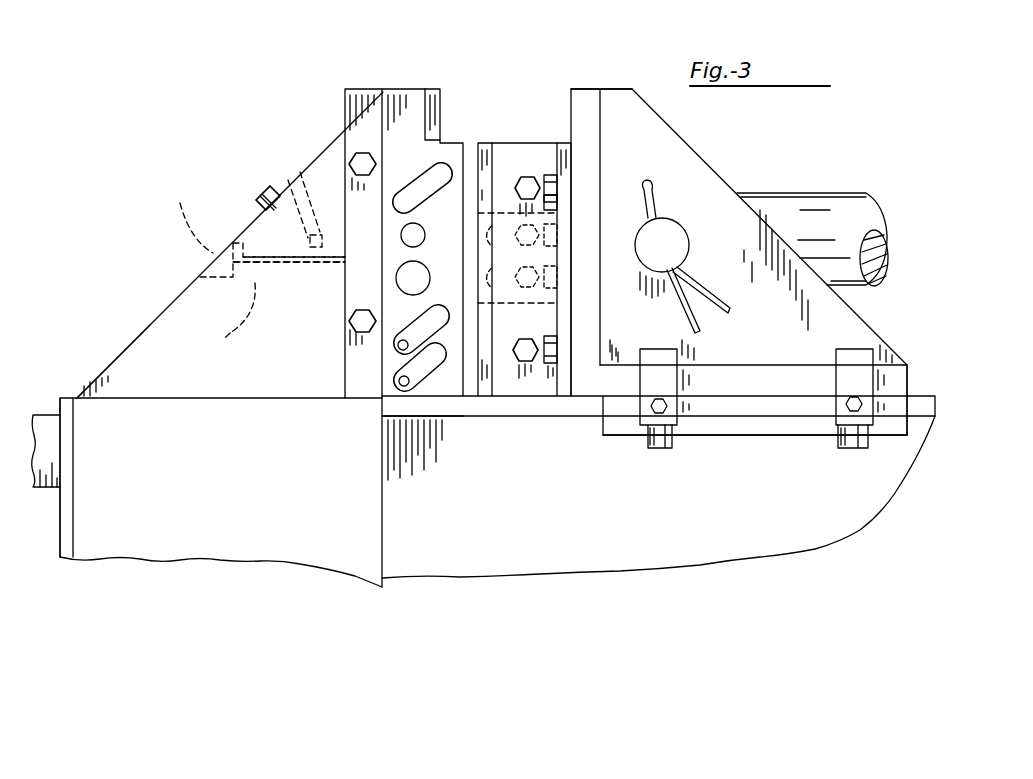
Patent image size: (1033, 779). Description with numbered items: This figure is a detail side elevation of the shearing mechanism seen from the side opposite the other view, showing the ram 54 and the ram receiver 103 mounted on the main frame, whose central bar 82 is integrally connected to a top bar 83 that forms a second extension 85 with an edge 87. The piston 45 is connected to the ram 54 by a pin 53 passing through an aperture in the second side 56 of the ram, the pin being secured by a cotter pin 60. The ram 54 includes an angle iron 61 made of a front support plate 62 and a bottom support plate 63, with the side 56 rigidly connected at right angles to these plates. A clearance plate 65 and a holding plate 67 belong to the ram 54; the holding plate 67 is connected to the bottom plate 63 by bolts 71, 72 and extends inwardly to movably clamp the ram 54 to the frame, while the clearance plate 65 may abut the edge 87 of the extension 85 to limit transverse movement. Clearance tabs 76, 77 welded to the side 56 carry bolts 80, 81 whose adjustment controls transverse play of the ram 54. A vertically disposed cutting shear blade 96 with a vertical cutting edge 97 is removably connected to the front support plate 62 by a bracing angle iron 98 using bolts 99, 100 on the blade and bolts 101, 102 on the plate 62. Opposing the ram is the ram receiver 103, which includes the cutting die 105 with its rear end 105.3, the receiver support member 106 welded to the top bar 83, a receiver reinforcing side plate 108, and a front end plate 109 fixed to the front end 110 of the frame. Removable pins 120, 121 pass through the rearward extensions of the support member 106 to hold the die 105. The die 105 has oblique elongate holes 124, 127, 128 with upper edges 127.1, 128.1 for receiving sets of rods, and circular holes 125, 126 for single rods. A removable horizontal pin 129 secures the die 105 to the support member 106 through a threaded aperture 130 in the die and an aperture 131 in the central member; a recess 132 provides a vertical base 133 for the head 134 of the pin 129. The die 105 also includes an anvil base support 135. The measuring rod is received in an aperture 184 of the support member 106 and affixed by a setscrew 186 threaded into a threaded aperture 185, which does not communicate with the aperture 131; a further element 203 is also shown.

The piston 45 is at (843, 195).
The pin 53 is at (680, 222).
The ram 54 is at (728, 177).
The second side 56 is at (682, 157).
The cotter pin 60 is at (640, 190).
The angle iron 61 is at (580, 88).
The front support plate 62 is at (568, 108).
The bottom support plate 63 is at (903, 372).
The clearance plate 65 is at (727, 407).
The holding plate 67 is at (762, 427).
The bolt 71 is at (847, 452).
The bolt 72 is at (663, 452).
The clearance tab 76 is at (836, 358).
The clearance tab 77 is at (640, 358).
The bolt 80 is at (847, 410).
The bolt 81 is at (653, 413).
The central bar 82 is at (535, 578).
The top bar 83 is at (468, 410).
The second extension 85 is at (447, 432).
The edge 87 is at (598, 410).
The cutting shear blade 96 is at (478, 152).
The cutting edge 97 is at (466, 140).
The bracing angle iron 98 is at (557, 152).
The bolt 99 is at (518, 176).
The bolt 100 is at (517, 362).
The bolt 101 is at (545, 364).
The bolt 102 is at (556, 208).
The ram receiver 103 is at (152, 313).
The cutting die 105 is at (397, 88).
The rear end 105.3 is at (277, 348).
The receiver support member 106 is at (118, 340).
The receiver reinforcing side plate 108 is at (227, 528).
The front end plate 109 is at (65, 542).
The front end 110 is at (157, 568).
The removable pin 120 is at (349, 322).
The removable pin 121 is at (362, 152).
The elongate hole 124 is at (430, 180).
The circular hole 125 is at (450, 224).
The circular hole 126 is at (456, 263).
The elongate hole 127 is at (405, 333).
The upper edge 127.1 is at (405, 368).
The elongate hole 128 is at (400, 380).
The upper edge 128.1 is at (407, 400).
The removable pin 129 is at (322, 262).
The threaded aperture 130 is at (340, 293).
The aperture 131 is at (341, 234).
The recess 132 is at (203, 253).
The vertical base 133 is at (223, 315).
The head 134 is at (179, 216).
The anvil base support 135 is at (417, 110).
The aperture 184 is at (310, 239).
The threaded aperture 185 is at (293, 190).
The setscrew 186 is at (273, 186).
The stub 203 is at (40, 412).